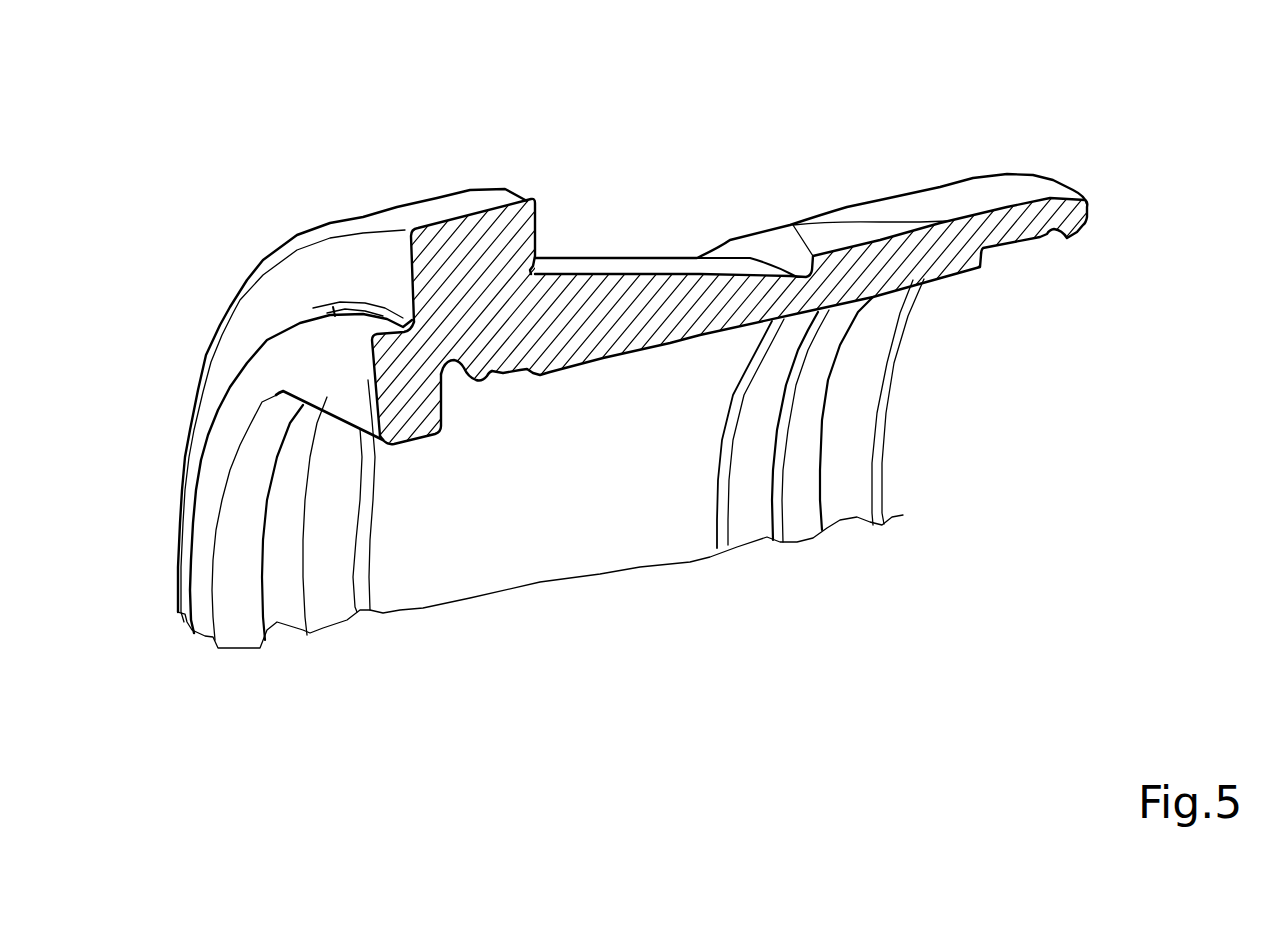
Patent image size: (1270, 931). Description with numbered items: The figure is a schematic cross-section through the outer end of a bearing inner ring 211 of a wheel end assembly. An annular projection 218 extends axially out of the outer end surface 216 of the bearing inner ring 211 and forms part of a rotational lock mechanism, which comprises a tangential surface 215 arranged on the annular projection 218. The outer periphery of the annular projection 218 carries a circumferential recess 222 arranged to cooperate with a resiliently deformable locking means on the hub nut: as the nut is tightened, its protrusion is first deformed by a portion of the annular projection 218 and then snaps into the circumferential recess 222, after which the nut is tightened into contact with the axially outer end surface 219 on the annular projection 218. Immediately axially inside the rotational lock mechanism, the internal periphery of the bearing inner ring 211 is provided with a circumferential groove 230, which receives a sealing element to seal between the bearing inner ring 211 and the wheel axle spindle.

The bearing inner ring 211 is at (621, 267).
The tangential surface 215 is at (404, 463).
The outer end surface 216 is at (372, 262).
The annular projection 218 is at (407, 390).
The axially outer end surface 219 is at (301, 390).
The circumferential recess 222 is at (381, 313).
The circumferential groove 230 is at (459, 394).